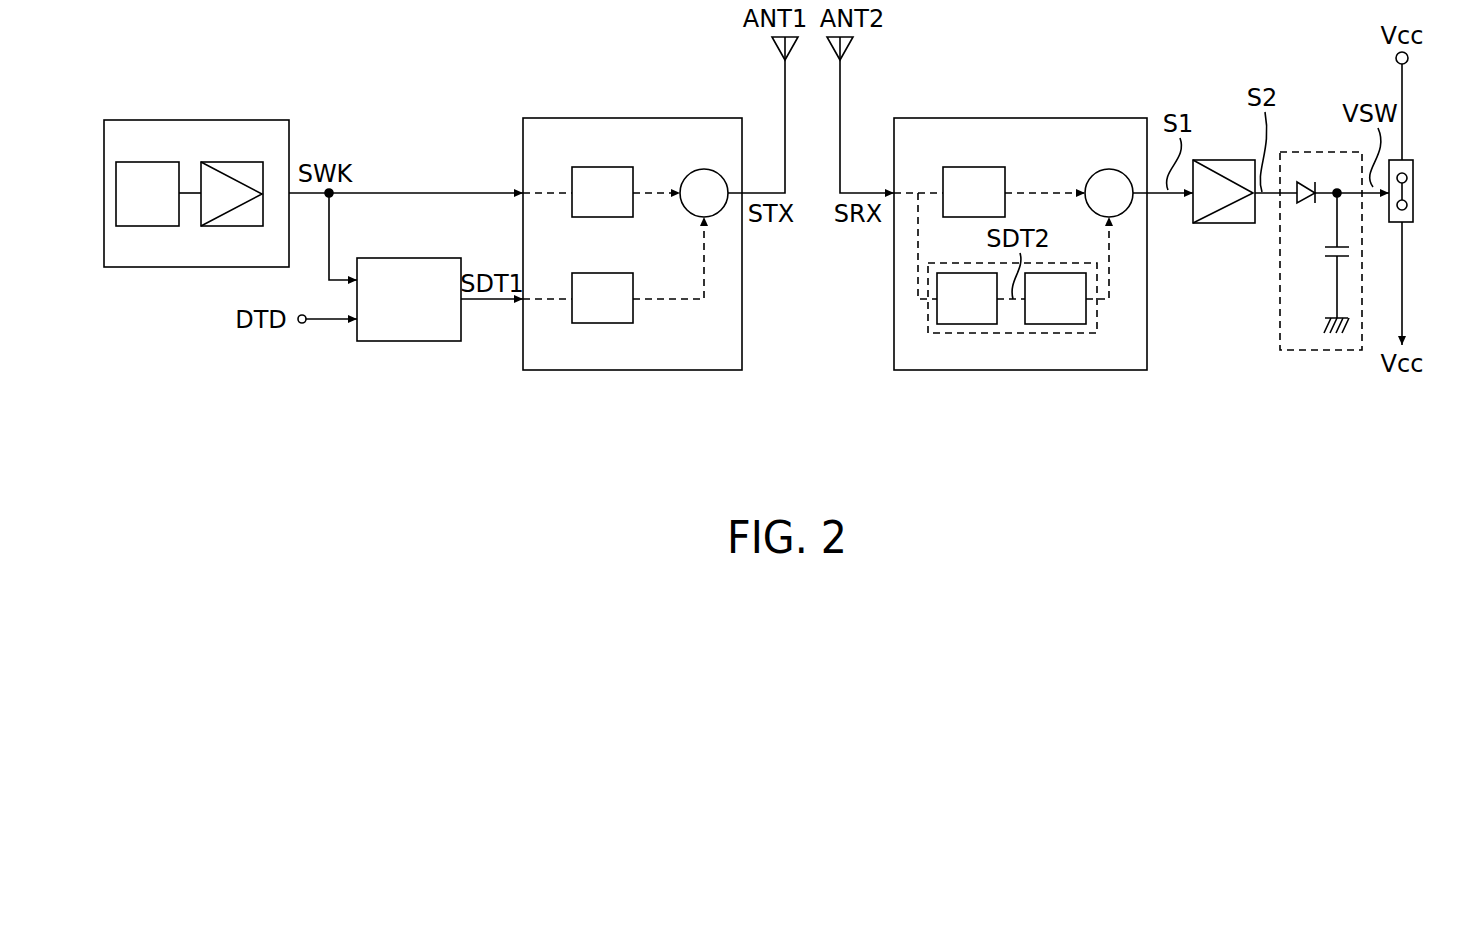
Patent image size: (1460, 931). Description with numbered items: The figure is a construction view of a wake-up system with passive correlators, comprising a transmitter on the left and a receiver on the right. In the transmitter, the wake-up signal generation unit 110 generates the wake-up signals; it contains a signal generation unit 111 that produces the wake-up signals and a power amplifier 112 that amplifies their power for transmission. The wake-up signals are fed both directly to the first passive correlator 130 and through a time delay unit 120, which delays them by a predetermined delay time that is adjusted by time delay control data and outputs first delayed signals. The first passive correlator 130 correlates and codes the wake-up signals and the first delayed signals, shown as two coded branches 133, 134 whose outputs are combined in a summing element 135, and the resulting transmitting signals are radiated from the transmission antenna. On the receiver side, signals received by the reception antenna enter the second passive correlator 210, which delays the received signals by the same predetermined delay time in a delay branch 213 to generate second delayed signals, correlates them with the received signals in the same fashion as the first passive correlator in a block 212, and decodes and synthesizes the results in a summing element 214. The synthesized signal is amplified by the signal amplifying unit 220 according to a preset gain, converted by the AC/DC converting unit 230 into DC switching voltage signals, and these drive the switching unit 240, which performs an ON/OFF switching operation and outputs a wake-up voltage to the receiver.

The wake-up signal generation unit 110 is at (197, 118).
The signal generation unit 111 is at (147, 179).
The power amplifier 112 is at (232, 179).
The time delay unit 120 is at (408, 342).
The first passive correlator 130 is at (542, 118).
The first modulator 133 is at (607, 167).
The second modulator 134 is at (603, 323).
The first adder 135 is at (705, 169).
The second passive correlator 210 is at (1020, 118).
The demodulator 212 is at (993, 167).
The delay processing unit 213 is at (1027, 333).
The second adder 214 is at (1122, 213).
The signal amplifying unit 220 is at (1235, 223).
The AC/DC converting unit 230 is at (1320, 152).
The switching unit 240 is at (1413, 222).